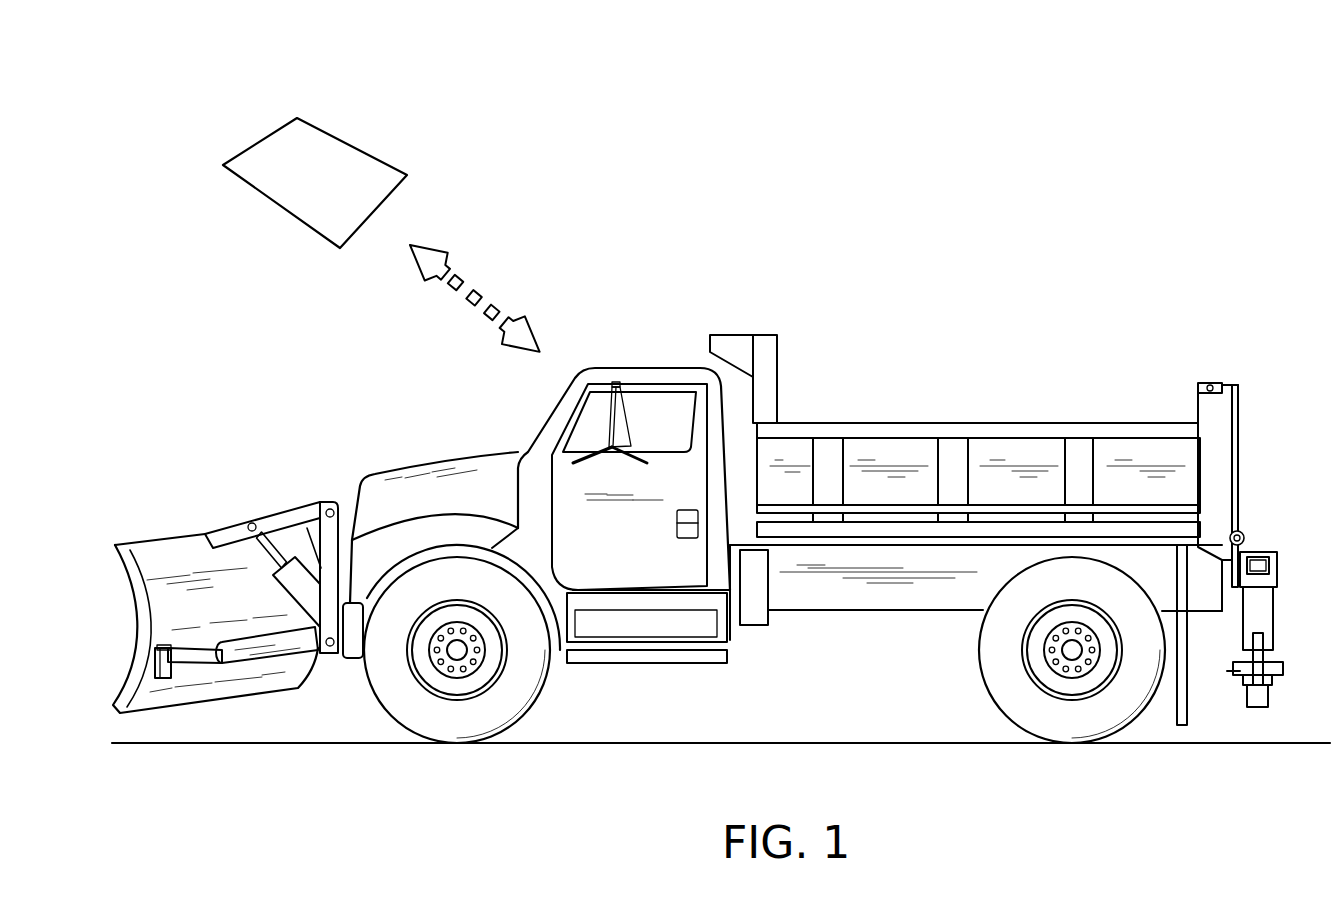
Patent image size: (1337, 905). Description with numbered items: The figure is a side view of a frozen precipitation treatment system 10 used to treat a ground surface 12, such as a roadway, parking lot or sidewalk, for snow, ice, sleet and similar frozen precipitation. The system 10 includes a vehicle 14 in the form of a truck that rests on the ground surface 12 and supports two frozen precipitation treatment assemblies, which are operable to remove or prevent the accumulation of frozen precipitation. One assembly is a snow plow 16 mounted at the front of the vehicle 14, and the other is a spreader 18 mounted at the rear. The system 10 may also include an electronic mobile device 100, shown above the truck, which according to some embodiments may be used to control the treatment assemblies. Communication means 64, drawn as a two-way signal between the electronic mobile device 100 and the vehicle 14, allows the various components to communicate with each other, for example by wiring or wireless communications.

The frozen precipitation treatment system 10 is at (675, 210).
The ground surface 12 is at (808, 742).
The vehicle 14 is at (838, 338).
The snow plow 16 is at (256, 495).
The spreader 18 is at (1270, 530).
The communication means 64 is at (476, 293).
The electronic mobile device 100 is at (355, 127).